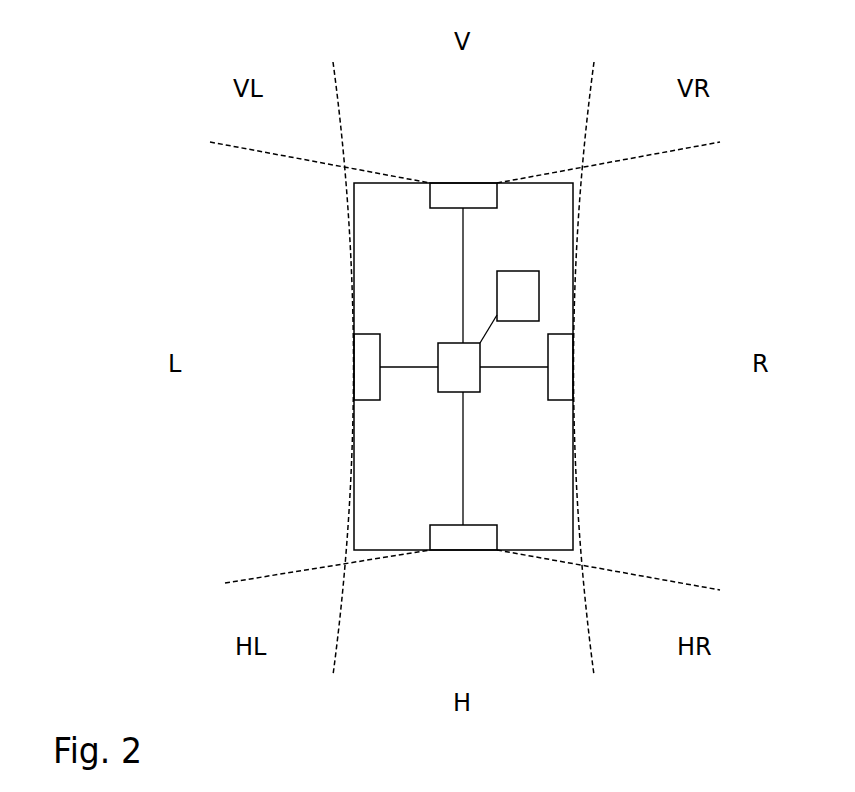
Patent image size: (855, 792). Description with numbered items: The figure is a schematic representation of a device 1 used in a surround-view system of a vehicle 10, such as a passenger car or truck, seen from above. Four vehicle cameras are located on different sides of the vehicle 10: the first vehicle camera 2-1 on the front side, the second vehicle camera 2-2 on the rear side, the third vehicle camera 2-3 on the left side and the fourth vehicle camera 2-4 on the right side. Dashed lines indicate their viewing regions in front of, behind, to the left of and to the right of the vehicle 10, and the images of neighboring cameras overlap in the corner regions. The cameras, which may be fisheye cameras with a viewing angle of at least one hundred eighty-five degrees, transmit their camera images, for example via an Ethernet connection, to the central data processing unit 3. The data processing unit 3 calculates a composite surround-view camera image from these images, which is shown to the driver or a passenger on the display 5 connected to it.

The device 1 is at (312, 257).
The vehicle 10 is at (572, 233).
The first vehicle camera 2-1 is at (488, 193).
The second vehicle camera 2-2 is at (478, 532).
The third vehicle camera 2-3 is at (366, 362).
The fourth vehicle camera 2-4 is at (557, 382).
The data processing unit 3 is at (448, 383).
The display 5 is at (522, 296).